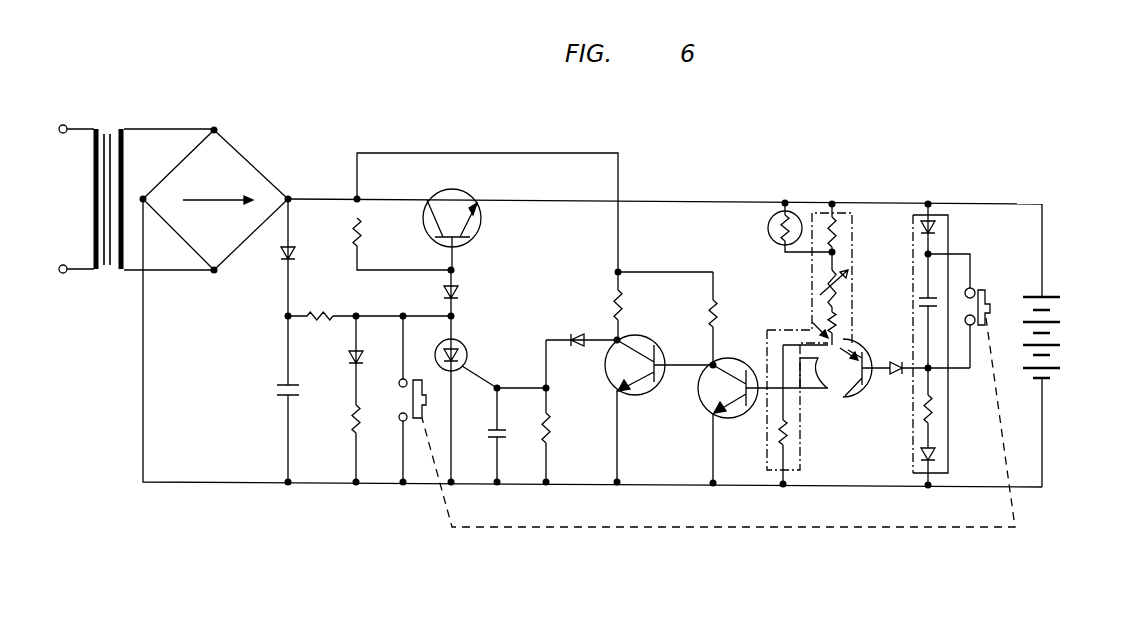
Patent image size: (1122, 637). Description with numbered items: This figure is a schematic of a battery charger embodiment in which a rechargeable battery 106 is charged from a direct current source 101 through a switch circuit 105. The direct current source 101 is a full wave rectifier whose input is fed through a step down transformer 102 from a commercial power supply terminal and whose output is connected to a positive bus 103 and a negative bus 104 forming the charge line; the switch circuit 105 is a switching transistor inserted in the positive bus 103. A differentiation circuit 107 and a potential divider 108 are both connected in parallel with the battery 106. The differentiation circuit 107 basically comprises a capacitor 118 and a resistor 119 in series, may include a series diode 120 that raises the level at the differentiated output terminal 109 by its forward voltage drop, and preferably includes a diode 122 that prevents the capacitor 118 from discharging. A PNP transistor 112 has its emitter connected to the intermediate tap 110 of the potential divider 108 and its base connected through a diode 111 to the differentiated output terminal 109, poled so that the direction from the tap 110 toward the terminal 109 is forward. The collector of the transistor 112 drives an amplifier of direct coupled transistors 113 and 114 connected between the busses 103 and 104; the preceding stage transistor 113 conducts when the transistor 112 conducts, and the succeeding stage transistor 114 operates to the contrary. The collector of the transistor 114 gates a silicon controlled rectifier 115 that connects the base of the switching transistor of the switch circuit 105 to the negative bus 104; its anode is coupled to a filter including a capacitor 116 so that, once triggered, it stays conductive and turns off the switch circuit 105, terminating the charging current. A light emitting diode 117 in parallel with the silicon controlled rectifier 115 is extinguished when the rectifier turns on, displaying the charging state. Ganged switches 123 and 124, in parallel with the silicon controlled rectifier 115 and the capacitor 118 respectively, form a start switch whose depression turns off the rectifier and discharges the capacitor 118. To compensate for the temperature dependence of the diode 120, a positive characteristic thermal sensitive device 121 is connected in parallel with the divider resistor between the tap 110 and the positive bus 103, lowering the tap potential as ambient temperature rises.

The direct current source 101 is at (235, 150).
The step down transformer 102 is at (110, 121).
The positive bus 103 is at (680, 201).
The negative bus 104 is at (320, 483).
The switch circuit 105 is at (479, 227).
The rechargeable battery 106 is at (1053, 294).
The differentiation circuit 107 is at (912, 227).
The potential divider 108 is at (778, 448).
The differentiated output terminal 109 is at (918, 378).
The intermediate tap 110 is at (827, 340).
The diode 111 is at (897, 357).
The transistor 112 is at (812, 341).
The preceding stage transistor 113 is at (731, 418).
The succeeding stage transistor 114 is at (634, 394).
The silicon controlled rectifier 115 is at (456, 368).
The capacitor 116 is at (276, 386).
The light emitting diode 117 is at (344, 359).
The capacitor 118 is at (922, 296).
The resistor 119 is at (937, 410).
The diode 120 is at (917, 458).
The thermal sensitive device 121 is at (775, 217).
The diode 122 is at (937, 233).
The switch 123 is at (410, 424).
The switch 124 is at (985, 288).